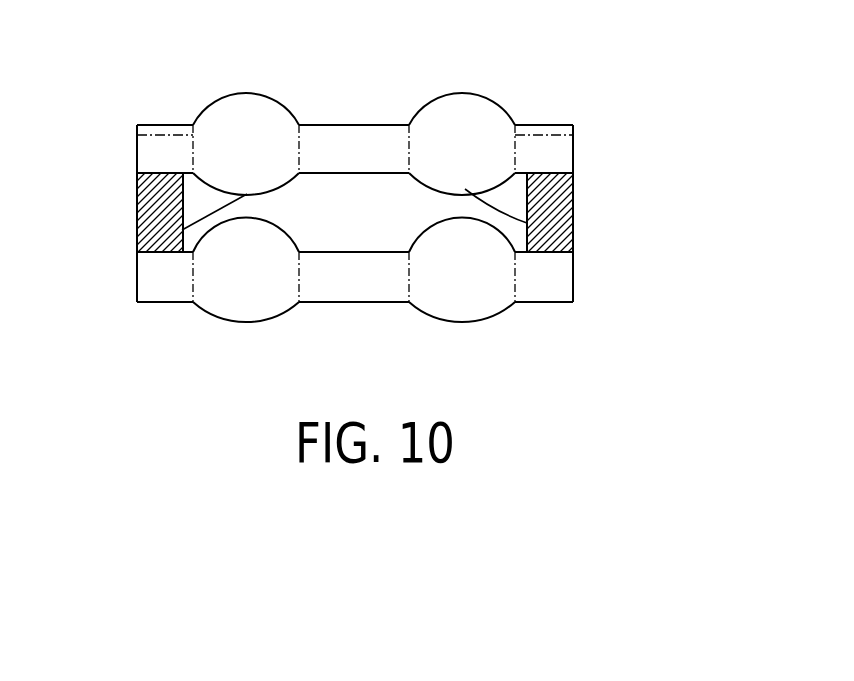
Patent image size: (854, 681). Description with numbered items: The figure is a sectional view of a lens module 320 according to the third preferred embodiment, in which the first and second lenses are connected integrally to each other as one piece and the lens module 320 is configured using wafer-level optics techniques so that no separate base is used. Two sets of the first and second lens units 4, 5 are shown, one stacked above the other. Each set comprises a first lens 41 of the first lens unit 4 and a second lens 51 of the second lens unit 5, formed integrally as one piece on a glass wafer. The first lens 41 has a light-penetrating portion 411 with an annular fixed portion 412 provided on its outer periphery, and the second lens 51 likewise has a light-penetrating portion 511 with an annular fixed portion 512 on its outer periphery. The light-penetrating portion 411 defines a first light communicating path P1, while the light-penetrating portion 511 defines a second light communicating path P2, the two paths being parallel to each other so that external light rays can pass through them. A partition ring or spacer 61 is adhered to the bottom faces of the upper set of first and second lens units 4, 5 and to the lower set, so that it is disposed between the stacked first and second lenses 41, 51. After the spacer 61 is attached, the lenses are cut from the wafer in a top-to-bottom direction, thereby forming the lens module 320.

The first lens unit 4 is at (283, 88).
The second lens unit 5 is at (430, 90).
The lens module 320 is at (620, 72).
The first lens 41 is at (140, 191).
The light-penetrating portion 411 is at (137, 242).
The annular fixed portion 412 is at (148, 152).
The partition ring 61 is at (137, 215).
The second lens 51 is at (575, 192).
The light-penetrating portion 511 is at (568, 234).
The annular fixed portion 512 is at (560, 152).
The first light communicating path P1 is at (137, 133).
The second light communicating path P2 is at (573, 133).